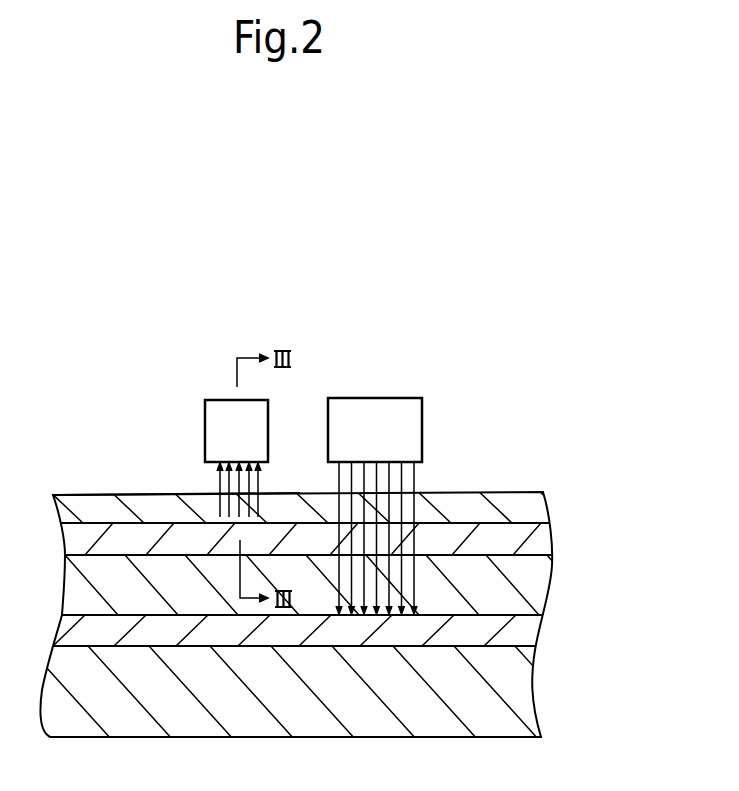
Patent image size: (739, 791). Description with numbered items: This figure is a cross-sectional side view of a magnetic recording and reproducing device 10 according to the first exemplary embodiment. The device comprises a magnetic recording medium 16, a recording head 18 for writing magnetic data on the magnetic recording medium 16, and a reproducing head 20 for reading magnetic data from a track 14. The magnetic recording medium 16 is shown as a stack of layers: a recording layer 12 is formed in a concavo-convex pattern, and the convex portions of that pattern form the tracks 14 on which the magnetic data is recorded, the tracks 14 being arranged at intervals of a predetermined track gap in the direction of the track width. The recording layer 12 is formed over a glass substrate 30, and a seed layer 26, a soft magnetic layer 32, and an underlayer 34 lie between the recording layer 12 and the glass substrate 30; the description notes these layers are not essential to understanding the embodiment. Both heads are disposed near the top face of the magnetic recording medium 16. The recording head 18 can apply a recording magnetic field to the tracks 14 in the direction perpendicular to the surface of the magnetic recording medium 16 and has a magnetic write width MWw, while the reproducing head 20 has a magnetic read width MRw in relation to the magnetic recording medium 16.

The magnetic recording and reproducing device 10 is at (322, 216).
The recording layer 12 is at (556, 505).
The track 14 is at (477, 503).
The magnetic recording medium 16 is at (119, 468).
The recording head 18 is at (390, 398).
The reproducing head 20 is at (222, 400).
The seed layer 26 is at (553, 537).
The glass substrate 30 is at (532, 695).
The soft magnetic layer 32 is at (553, 588).
The underlayer 34 is at (547, 632).